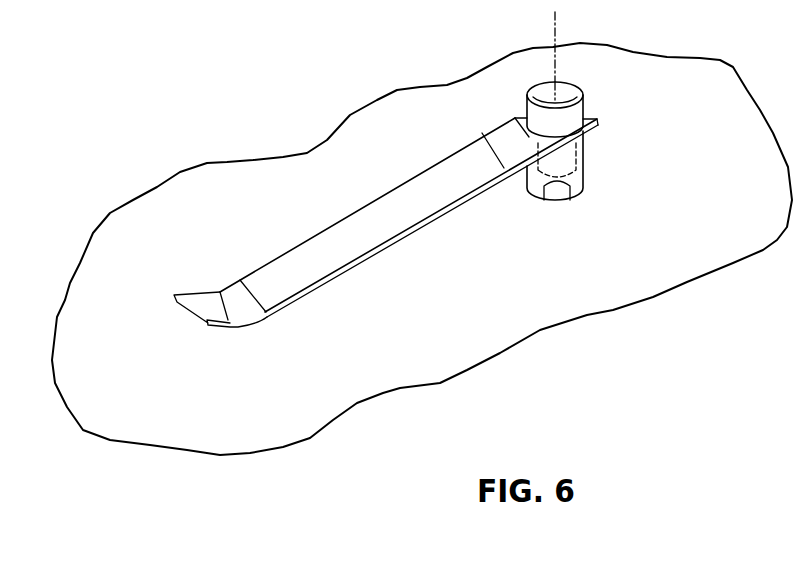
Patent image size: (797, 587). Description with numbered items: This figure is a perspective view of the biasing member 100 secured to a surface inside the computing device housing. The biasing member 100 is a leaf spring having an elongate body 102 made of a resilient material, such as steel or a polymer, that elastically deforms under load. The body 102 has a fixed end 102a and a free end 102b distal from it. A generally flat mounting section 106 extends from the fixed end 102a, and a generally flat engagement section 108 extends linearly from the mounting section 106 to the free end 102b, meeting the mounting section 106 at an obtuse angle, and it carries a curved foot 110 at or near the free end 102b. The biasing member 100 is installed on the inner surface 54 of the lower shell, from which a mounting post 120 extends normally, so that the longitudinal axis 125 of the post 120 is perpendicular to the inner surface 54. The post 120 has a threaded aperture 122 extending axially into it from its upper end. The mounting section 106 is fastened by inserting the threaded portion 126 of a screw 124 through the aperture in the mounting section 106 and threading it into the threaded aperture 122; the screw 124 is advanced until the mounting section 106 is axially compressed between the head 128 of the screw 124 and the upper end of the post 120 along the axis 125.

The inner surface 54 is at (92, 410).
The biasing member 100 is at (380, 124).
The elongate body 102 is at (427, 207).
The fixed end 102a is at (615, 128).
The free end 102b is at (180, 319).
The mounting section 106 is at (516, 112).
The engagement section 108 is at (332, 216).
The curved foot 110 is at (213, 286).
The mounting post 120 is at (572, 126).
The threaded aperture 122 is at (570, 200).
The screw 124 is at (570, 75).
The longitudinal axis 125 is at (553, 38).
The threaded portion 126 is at (544, 200).
The head 128 is at (575, 96).